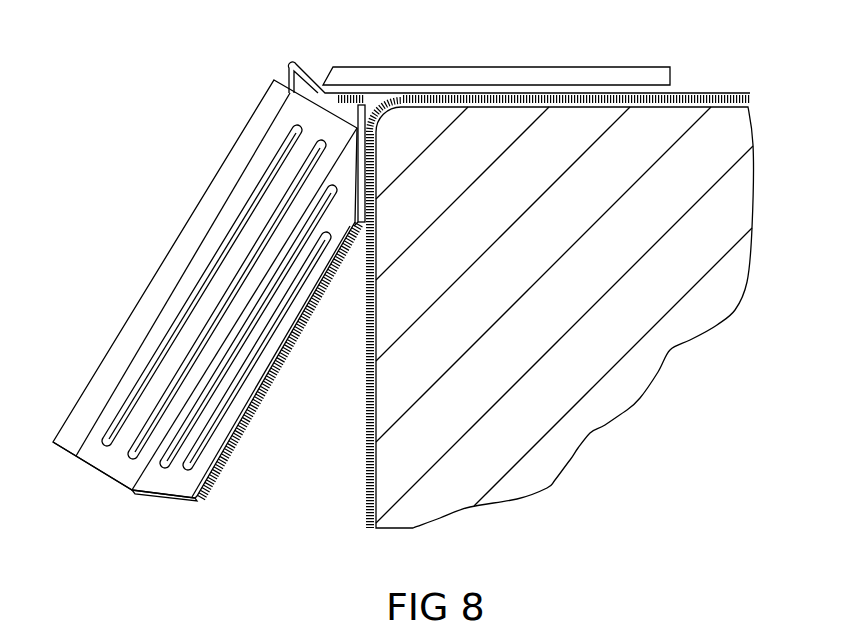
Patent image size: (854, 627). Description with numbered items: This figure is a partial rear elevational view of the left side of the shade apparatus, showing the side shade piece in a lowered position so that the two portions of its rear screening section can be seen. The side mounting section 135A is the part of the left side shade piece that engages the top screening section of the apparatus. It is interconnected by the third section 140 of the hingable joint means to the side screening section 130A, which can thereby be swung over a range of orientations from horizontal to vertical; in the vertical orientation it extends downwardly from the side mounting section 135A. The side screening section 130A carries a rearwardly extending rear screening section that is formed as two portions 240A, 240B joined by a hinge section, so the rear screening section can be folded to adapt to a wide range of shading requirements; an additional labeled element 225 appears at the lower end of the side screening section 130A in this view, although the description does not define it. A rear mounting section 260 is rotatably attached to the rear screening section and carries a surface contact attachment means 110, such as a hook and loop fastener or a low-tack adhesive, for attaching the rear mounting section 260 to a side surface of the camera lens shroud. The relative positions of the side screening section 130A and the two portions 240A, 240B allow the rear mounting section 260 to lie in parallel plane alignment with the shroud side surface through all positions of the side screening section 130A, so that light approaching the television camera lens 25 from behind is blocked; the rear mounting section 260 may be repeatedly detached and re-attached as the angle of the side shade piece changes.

The television camera lens 25 is at (367, 425).
The surface contact attachment means 110 is at (374, 150).
The rear mounting section 260 is at (360, 188).
The third section of the hingable joint means 140 is at (318, 58).
The side mounting section 135A is at (488, 64).
The side screening section 130A is at (165, 258).
The second portion of the rear screening section 240B is at (295, 305).
The first portion of the rear screening section 240A is at (97, 470).
The end strip 225 is at (148, 462).